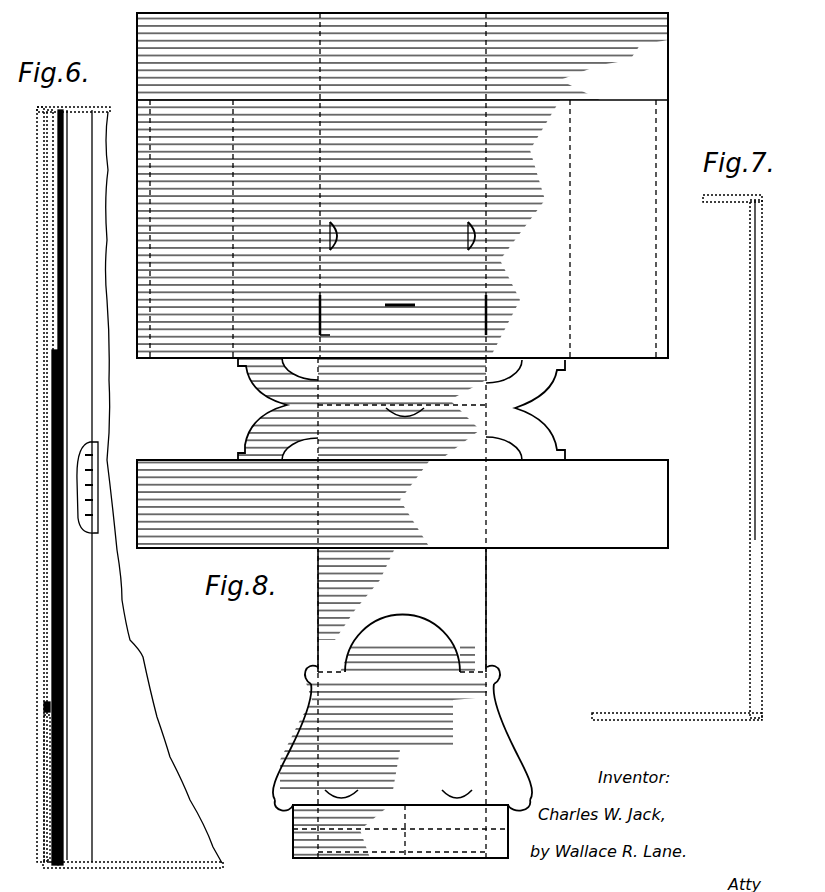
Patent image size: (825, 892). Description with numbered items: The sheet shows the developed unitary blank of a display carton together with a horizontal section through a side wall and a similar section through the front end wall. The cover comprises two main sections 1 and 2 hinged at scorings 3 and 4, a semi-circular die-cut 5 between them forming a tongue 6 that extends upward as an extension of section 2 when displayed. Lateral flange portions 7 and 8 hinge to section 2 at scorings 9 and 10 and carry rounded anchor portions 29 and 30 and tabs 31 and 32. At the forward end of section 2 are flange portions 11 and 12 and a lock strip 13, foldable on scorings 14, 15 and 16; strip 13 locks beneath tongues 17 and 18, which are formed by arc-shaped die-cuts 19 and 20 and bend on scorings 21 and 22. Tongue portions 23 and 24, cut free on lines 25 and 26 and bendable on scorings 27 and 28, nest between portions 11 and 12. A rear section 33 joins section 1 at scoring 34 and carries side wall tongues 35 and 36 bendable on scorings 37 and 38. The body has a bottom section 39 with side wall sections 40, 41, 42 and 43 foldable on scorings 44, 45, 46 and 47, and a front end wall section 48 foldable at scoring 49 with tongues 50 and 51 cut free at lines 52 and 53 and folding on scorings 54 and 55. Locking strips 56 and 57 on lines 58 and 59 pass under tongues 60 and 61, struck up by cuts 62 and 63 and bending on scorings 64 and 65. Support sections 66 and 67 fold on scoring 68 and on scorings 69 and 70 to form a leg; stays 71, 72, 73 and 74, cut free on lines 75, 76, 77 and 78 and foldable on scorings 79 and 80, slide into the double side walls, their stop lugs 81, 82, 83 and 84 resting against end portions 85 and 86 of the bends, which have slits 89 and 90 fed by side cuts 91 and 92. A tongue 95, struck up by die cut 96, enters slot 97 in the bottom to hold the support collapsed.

In FIG. 8, the cover section 1 is at (415, 580).
In FIG. 8, the cover section 2 is at (413, 726).
In FIG. 8, the scoring 3 is at (482, 670).
In FIG. 8, the scoring 4 is at (318, 665).
In FIG. 8, the semi-circular die-cut 5 is at (420, 624).
In FIG. 8, the tongue 6 is at (402, 644).
In FIG. 8, the flange portion 7 is at (505, 769).
In FIG. 7, the flange portion 7 is at (726, 203).
In FIG. 8, the flange portion 8 is at (295, 766).
In FIG. 7, the flange portion 8 is at (696, 714).
In FIG. 8, the scoring 9 is at (486, 730).
In FIG. 8, the scoring 10 is at (315, 728).
In FIG. 8, the flange portion 11 is at (372, 818).
In FIG. 7, the flange portion 11 is at (758, 467).
In FIG. 8, the flange portion 12 is at (370, 840).
In FIG. 7, the flange portion 12 is at (752, 467).
In FIG. 8, the lock strip 13 is at (372, 856).
In FIG. 8, the scoring 14 is at (405, 820).
In FIG. 8, the scoring 15 is at (427, 830).
In FIG. 8, the scoring 16 is at (455, 852).
In FIG. 8, the tongue 17 is at (346, 794).
In FIG. 8, the tongue 18 is at (457, 793).
In FIG. 8, the arc-shaped die-cut 19 is at (356, 796).
In FIG. 8, the arc-shaped die-cut 20 is at (444, 796).
In FIG. 8, the scoring 21 is at (343, 793).
In FIG. 8, the scoring 22 is at (459, 792).
In FIG. 8, the tongue portion 23 is at (498, 830).
In FIG. 7, the tongue portion 23 is at (762, 300).
In FIG. 8, the tongue portion 24 is at (304, 829).
In FIG. 7, the tongue portion 24 is at (762, 602).
In FIG. 8, the line 25 is at (489, 846).
In FIG. 8, the line 26 is at (316, 846).
In FIG. 8, the scoring 27 is at (513, 798).
In FIG. 8, the scoring 28 is at (312, 775).
In FIG. 8, the rounded end portion 29 is at (530, 800).
In FIG. 8, the rounded end portion 30 is at (276, 800).
In FIG. 8, the tab 31 is at (500, 675).
In FIG. 8, the tab 32 is at (304, 675).
In FIG. 6, the rear section 33 is at (162, 858).
In FIG. 8, the rear section 33 is at (370, 518).
In FIG. 8, the scoring 34 is at (416, 548).
In FIG. 8, the side wall tongue 35 is at (590, 507).
In FIG. 6, the side wall tongue 36 is at (50, 645).
In FIG. 8, the side wall tongue 36 is at (230, 504).
In FIG. 8, the scoring 37 is at (486, 510).
In FIG. 8, the scoring 38 is at (314, 502).
In FIG. 6, the bottom section 39 is at (164, 487).
In FIG. 8, the bottom section 39 is at (406, 196).
In FIG. 8, the side wall section 40 is at (530, 226).
In FIG. 8, the side wall section 41 is at (608, 229).
In FIG. 6, the side wall section 42 is at (38, 333).
In FIG. 8, the side wall section 42 is at (268, 219).
In FIG. 6, the side wall section 43 is at (60, 382).
In FIG. 8, the side wall section 43 is at (190, 221).
In FIG. 8, the scoring 44 is at (488, 200).
In FIG. 8, the scoring 45 is at (572, 200).
In FIG. 8, the scoring 46 is at (320, 180).
In FIG. 8, the scoring 47 is at (232, 168).
In FIG. 6, the front end wall section 48 is at (80, 110).
In FIG. 8, the front end wall section 48 is at (395, 58).
In FIG. 8, the scoring 49 is at (415, 100).
In FIG. 8, the tongue 50 is at (577, 67).
In FIG. 6, the tongue 51 is at (46, 272).
In FIG. 8, the tongue 51 is at (226, 54).
In FIG. 8, the line 52 is at (600, 100).
In FIG. 8, the line 53 is at (218, 100).
In FIG. 8, the scoring 54 is at (490, 70).
In FIG. 8, the scoring 55 is at (320, 56).
In FIG. 8, the locking strip 56 is at (668, 266).
In FIG. 6, the locking strip 57 is at (80, 422).
In FIG. 8, the locking strip 57 is at (140, 295).
In FIG. 8, the line 58 is at (656, 312).
In FIG. 8, the line 59 is at (148, 348).
In FIG. 8, the tongue 60 is at (476, 246).
In FIG. 6, the tongue 61 is at (84, 486).
In FIG. 8, the tongue 61 is at (333, 243).
In FIG. 8, the cut 62 is at (474, 228).
In FIG. 8, the cut 63 is at (330, 226).
In FIG. 8, the scoring 64 is at (466, 232).
In FIG. 6, the scoring 65 is at (92, 450).
In FIG. 8, the scoring 65 is at (340, 234).
In FIG. 6, the support section 66 is at (65, 10).
In FIG. 8, the support section 66 is at (440, 386).
In FIG. 6, the support section 67 is at (105, 12).
In FIG. 8, the support section 67 is at (438, 440).
In FIG. 8, the scoring 68 is at (358, 408).
In FIG. 8, the scoring 69 is at (400, 358).
In FIG. 8, the scoring 70 is at (400, 462).
In FIG. 8, the stay 71 is at (528, 438).
In FIG. 8, the stay 72 is at (528, 383).
In FIG. 6, the stay 73 is at (62, 738).
In FIG. 8, the stay 73 is at (282, 434).
In FIG. 6, the stay 74 is at (47, 752).
In FIG. 8, the stay 74 is at (278, 384).
In FIG. 8, the line 75 is at (544, 462).
In FIG. 8, the line 76 is at (536, 360).
In FIG. 8, the line 77 is at (260, 456).
In FIG. 8, the line 78 is at (262, 358).
In FIG. 8, the scoring 79 is at (486, 423).
In FIG. 8, the scoring 80 is at (322, 398).
In FIG. 8, the stop lug 81 is at (563, 455).
In FIG. 8, the stop lug 82 is at (562, 366).
In FIG. 6, the stop lug 83 is at (62, 846).
In FIG. 8, the stop lug 83 is at (242, 452).
In FIG. 6, the stop lug 84 is at (43, 850).
In FIG. 8, the stop lug 84 is at (240, 362).
In FIG. 8, the end portion of bend 85 is at (486, 298).
In FIG. 6, the end portion of bend 86 is at (45, 700).
In FIG. 8, the end portion of bend 86 is at (321, 296).
In FIG. 8, the slit 89 is at (488, 318).
In FIG. 8, the slit 90 is at (318, 312).
In FIG. 8, the side cut 91 is at (480, 312).
In FIG. 8, the side cut 92 is at (323, 306).
In FIG. 8, the tongue 95 is at (400, 418).
In FIG. 8, the die cut 96 is at (417, 414).
In FIG. 8, the slot 97 is at (400, 317).